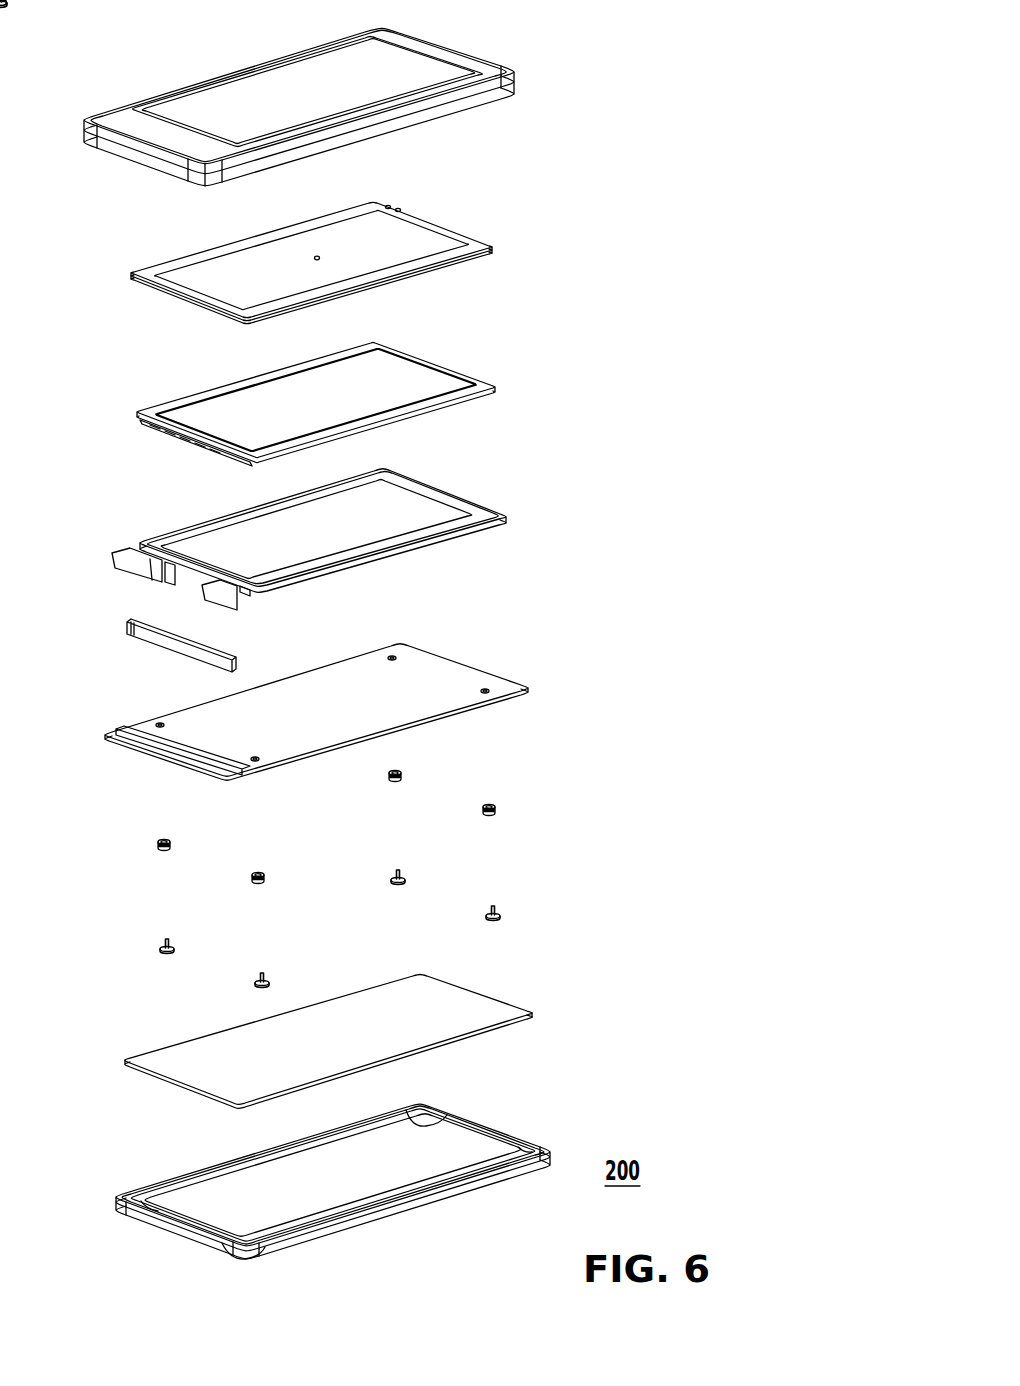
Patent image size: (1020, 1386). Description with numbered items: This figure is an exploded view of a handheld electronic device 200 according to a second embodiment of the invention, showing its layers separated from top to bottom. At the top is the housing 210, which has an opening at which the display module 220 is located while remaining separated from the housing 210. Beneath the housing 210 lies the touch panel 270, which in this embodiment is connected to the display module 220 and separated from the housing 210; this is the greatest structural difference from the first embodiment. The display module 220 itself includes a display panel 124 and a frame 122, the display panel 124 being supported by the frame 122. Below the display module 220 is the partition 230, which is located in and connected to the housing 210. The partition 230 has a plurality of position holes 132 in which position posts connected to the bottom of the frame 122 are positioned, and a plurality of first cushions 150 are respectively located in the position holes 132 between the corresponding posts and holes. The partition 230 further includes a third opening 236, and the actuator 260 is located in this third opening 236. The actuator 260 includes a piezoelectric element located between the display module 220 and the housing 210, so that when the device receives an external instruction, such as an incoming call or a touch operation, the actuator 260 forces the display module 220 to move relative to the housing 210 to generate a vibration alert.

The handheld electronic device 200 is at (333, 1117).
The housing 210 is at (490, 67).
The touch panel 270 is at (422, 237).
The display panel 124 is at (432, 380).
The display module 220 is at (160, 423).
The frame 122 is at (438, 508).
The actuator 260 is at (160, 642).
The partition 230 is at (310, 706).
The position holes 132 is at (486, 696).
The third opening 236 is at (178, 747).
The first cushions 150 is at (158, 845).